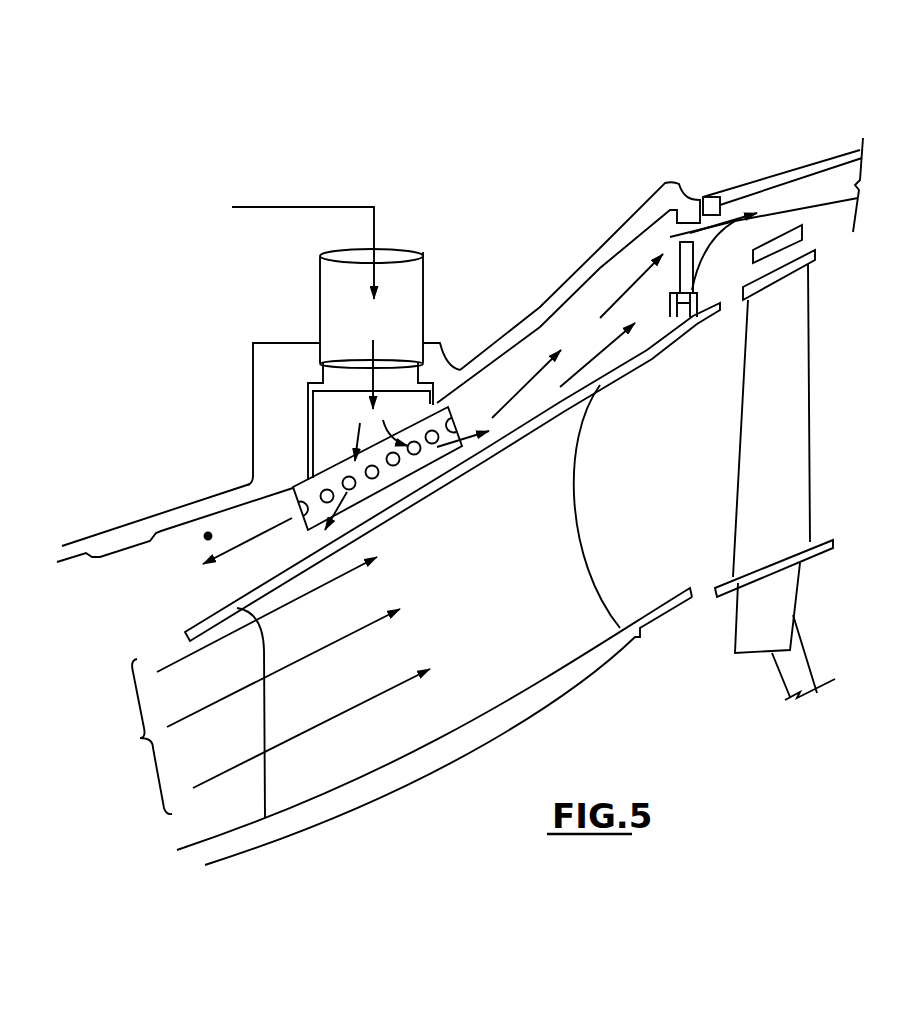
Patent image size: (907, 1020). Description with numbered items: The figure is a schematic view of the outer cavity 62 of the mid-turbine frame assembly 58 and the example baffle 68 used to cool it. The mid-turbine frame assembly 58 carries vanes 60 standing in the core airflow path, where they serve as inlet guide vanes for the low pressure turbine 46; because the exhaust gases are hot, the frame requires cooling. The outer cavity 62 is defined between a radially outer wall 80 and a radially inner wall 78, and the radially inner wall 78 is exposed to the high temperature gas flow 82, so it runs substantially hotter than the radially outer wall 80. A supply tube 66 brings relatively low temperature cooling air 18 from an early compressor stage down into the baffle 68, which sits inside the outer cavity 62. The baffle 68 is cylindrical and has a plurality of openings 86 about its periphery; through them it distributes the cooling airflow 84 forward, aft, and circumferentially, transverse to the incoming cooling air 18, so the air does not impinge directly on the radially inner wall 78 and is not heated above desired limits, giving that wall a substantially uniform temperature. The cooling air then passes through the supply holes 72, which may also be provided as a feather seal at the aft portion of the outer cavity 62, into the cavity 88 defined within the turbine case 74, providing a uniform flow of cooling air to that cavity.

The cooling air 18 is at (376, 228).
The low pressure turbine 46 is at (778, 447).
The mid-turbine frame assembly 58 is at (636, 713).
The vanes 60 is at (573, 488).
The outer cavity 62 is at (206, 533).
The supply tube 66 is at (332, 318).
The baffle 68 is at (322, 489).
The supply holes 72 is at (712, 209).
The turbine case 74 is at (822, 163).
The radially inner wall 78 is at (562, 414).
The radially outer wall 80 is at (542, 307).
The high temperature gas flow 82 is at (140, 738).
The cooling airflow 84 is at (596, 299).
The openings 86 is at (393, 467).
The cavity 88 is at (800, 202).